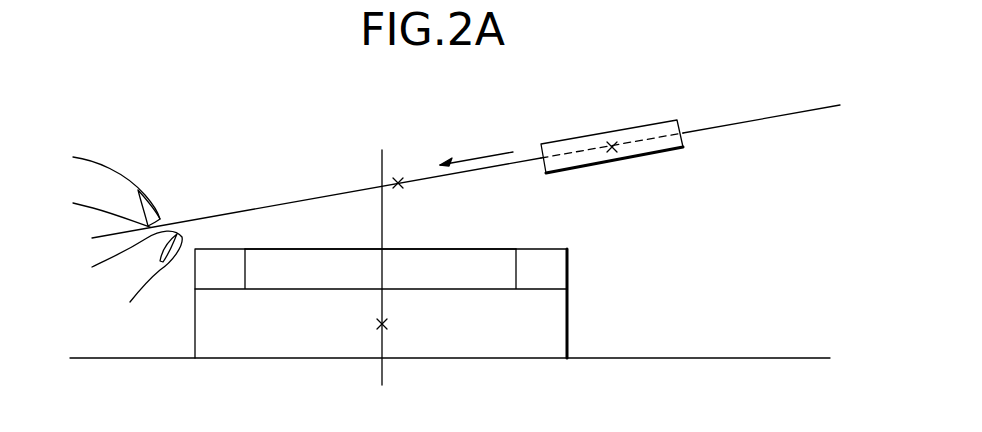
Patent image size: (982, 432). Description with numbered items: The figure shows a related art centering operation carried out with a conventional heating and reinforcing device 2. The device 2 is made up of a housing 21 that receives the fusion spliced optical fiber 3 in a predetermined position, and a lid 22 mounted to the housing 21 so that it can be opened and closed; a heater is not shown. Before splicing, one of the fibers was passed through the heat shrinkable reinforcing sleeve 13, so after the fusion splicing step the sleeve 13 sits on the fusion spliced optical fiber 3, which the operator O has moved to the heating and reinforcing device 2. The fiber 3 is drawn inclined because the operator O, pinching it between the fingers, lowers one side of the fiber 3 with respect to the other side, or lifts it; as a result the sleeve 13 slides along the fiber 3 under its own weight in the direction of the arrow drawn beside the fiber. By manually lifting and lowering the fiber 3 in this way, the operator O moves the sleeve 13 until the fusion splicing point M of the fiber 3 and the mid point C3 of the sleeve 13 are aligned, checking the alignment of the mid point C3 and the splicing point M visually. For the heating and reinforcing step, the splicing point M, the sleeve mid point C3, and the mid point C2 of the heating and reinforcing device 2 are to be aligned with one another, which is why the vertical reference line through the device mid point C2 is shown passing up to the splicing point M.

The operator O is at (110, 162).
The fusion spliced optical fiber 3 is at (768, 115).
The heat shrinkable reinforcing sleeve 13 is at (627, 128).
The mid point of the heat shrinkable reinforcing sleeve C3 is at (617, 158).
The fusion splicing point M is at (398, 183).
The heating and reinforcing device 2 is at (587, 302).
The housing 21 is at (312, 285).
The lid 22 is at (533, 248).
The mid point of the heating and reinforcing device C2 is at (385, 328).